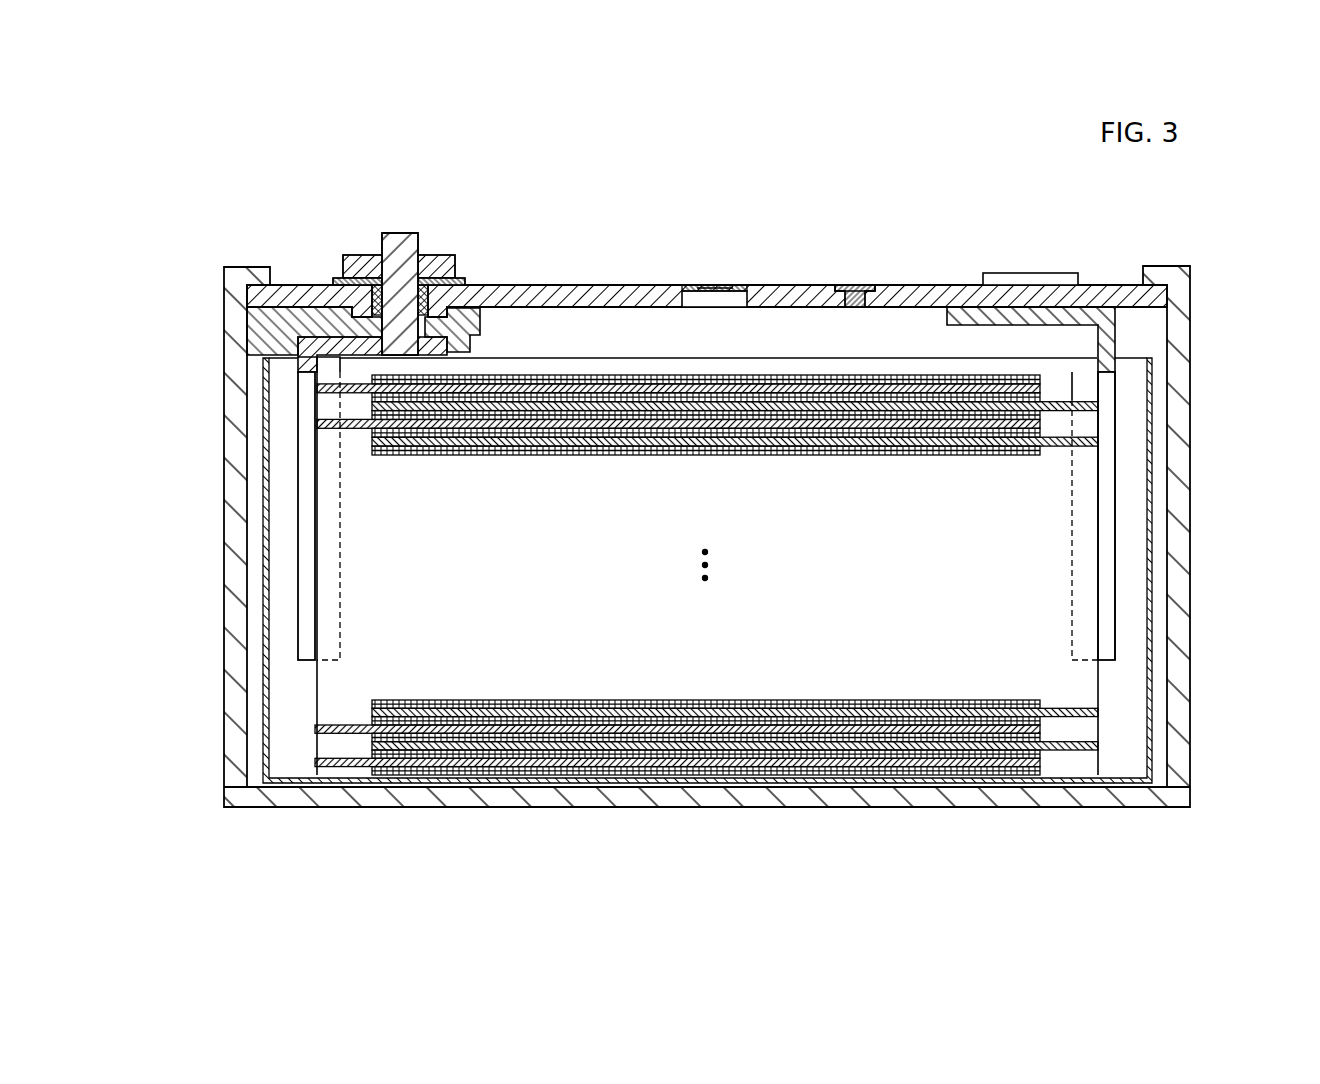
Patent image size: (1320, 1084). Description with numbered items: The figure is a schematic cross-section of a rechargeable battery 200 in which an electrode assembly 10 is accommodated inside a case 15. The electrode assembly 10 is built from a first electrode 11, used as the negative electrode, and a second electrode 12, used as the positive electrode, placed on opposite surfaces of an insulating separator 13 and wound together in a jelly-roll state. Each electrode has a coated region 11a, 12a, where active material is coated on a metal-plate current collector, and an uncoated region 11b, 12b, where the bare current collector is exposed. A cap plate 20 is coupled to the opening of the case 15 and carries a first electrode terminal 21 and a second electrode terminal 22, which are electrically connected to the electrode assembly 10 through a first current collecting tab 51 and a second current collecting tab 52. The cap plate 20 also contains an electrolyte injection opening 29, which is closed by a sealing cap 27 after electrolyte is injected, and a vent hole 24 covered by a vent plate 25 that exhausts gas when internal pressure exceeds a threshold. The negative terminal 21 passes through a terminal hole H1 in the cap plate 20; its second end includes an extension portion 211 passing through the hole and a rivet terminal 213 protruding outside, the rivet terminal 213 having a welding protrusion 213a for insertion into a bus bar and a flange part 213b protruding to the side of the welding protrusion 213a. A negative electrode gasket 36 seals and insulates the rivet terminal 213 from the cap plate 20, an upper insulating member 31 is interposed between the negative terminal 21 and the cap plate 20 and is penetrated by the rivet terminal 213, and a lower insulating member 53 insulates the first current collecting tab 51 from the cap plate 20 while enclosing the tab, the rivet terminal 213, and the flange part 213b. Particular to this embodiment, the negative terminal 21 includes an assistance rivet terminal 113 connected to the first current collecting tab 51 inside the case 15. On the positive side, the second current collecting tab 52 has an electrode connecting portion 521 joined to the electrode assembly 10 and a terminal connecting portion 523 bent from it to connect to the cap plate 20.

The rechargeable battery 200 is at (722, 123).
The electrode assembly 10 is at (838, 792).
The first electrode 11 is at (594, 632).
The coated region 11a is at (465, 770).
The uncoated region 11b is at (325, 383).
The second electrode 12 is at (736, 640).
The coated region 12a is at (960, 770).
The uncoated region 12b is at (1081, 619).
The separator 13 is at (556, 378).
The case 15 is at (1182, 528).
The cap plate 20 is at (790, 296).
The first electrode terminal 21 is at (449, 235).
The extension portion 211 is at (397, 250).
The rivet terminal 213 is at (449, 200).
The welding protrusion 213a is at (380, 268).
The flange part 213b is at (458, 278).
The terminal hole H1 is at (380, 252).
The second electrode terminal 22 is at (1027, 262).
The vent hole 24 is at (710, 300).
The vent plate 25 is at (742, 285).
The sealing cap 27 is at (860, 292).
The electrolyte injection opening 29 is at (850, 286).
The upper insulating member 31 is at (430, 290).
The negative electrode gasket 36 is at (315, 288).
The first current collecting tab 51 is at (284, 501).
The second current collecting tab 52 is at (1176, 516).
The electrode connecting portion 521 is at (1107, 477).
The terminal connecting portion 523 is at (1062, 332).
The lower insulating member 53 is at (268, 330).
The assistance rivet terminal 113 is at (316, 357).